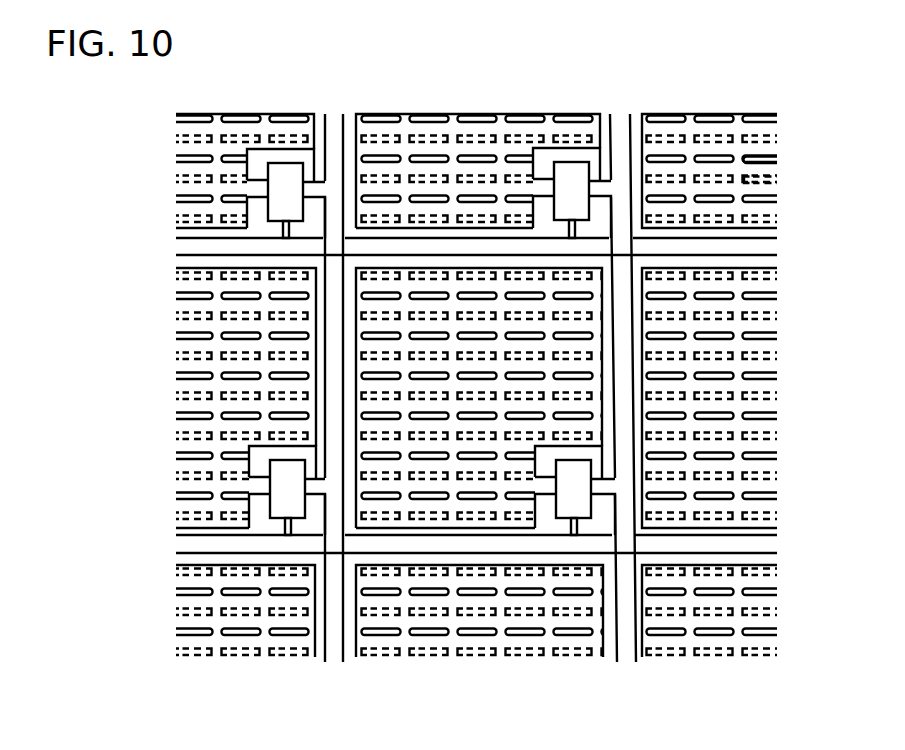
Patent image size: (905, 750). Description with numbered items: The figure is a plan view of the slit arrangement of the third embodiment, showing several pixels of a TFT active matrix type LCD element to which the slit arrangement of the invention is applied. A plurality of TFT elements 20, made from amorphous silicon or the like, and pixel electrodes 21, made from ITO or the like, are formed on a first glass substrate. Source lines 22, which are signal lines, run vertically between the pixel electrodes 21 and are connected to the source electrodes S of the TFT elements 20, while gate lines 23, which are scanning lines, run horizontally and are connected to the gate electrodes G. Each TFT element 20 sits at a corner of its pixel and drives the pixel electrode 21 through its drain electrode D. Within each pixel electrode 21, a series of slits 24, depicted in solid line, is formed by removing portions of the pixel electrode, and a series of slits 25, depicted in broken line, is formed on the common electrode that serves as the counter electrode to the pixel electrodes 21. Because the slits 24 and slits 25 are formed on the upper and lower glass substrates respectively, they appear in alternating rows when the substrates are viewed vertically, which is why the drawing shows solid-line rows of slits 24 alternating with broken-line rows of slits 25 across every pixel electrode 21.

The TFT element 20 is at (571, 163).
The pixel electrode 21 is at (367, 127).
The source line 22 is at (335, 125).
The gate line 23 is at (763, 546).
The slit 24 is at (772, 159).
The slit 25 is at (774, 175).
The drain electrode D is at (547, 180).
The source electrode S is at (600, 180).
The gate electrode G is at (578, 228).